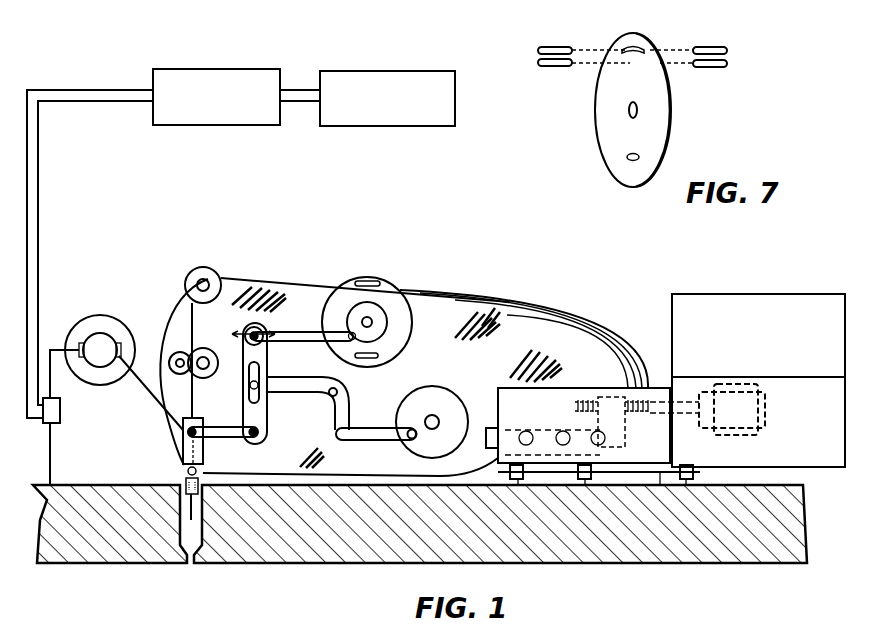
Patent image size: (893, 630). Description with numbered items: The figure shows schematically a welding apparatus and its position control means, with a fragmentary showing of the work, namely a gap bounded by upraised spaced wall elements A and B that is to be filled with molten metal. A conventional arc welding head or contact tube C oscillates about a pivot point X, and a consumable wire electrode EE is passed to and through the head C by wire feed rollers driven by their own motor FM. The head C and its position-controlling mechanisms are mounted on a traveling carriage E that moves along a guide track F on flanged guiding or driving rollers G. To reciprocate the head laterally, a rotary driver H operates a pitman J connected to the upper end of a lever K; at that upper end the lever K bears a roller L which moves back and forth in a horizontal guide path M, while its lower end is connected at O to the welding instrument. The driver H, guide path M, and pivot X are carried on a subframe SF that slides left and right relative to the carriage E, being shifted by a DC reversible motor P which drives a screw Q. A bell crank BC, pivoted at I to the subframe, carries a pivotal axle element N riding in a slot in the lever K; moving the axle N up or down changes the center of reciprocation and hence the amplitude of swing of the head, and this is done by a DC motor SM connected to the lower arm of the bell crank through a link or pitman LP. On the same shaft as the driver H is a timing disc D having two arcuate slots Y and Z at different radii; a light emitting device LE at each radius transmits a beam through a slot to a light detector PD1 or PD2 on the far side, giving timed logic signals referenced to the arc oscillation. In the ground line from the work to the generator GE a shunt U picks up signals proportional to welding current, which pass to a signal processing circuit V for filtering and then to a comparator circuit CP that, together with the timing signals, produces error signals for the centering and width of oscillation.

In FIG. 1, the signal processing circuit V is at (238, 125).
In FIG. 1, the comparator circuit CP is at (396, 127).
In FIG. 1, the generator GE is at (99, 315).
In FIG. 1, the shunt U is at (60, 415).
In FIG. 1, the consumable wire electrode EE is at (188, 292).
In FIG. 1, the wire feed motor FM is at (176, 352).
In FIG. 1, the horizontal guide path M is at (237, 328).
In FIG. 1, the roller L is at (248, 339).
In FIG. 1, the pitman J is at (279, 332).
In FIG. 1, the lever K is at (267, 360).
In FIG. 1, the pivotal axle element N is at (259, 390).
In FIG. 1, the pivot I is at (330, 396).
In FIG. 1, the bell crank BC is at (340, 393).
In FIG. 1, the link or pitman LP is at (378, 442).
In FIG. 1, the DC motor SM is at (441, 388).
In FIG. 1, the arcuate slot Y is at (374, 281).
In FIG. 7, the arcuate slot Y is at (640, 45).
In FIG. 1, the rotary driver H is at (388, 317).
In FIG. 1, the rotating disc D is at (404, 352).
In FIG. 7, the rotating disc D is at (677, 115).
In FIG. 1, the arcuate slot Z is at (376, 359).
In FIG. 7, the arcuate slot Z is at (628, 160).
In FIG. 1, the subframe SF is at (572, 318).
In FIG. 1, the screw Q is at (657, 400).
In FIG. 1, the DC reversible motor P is at (734, 385).
In FIG. 1, the traveling carriage E is at (846, 397).
In FIG. 1, the flanged rollers G is at (515, 480).
In FIG. 1, the guide track F is at (592, 481).
In FIG. 1, the pivot point X is at (187, 471).
In FIG. 1, the welding head C is at (203, 455).
In FIG. 1, the connection point O is at (258, 437).
In FIG. 1, the wall element A is at (180, 512).
In FIG. 1, the wall element B is at (203, 517).
In FIG. 7, the light detector PD1 is at (550, 46).
In FIG. 7, the light detector PD2 is at (548, 66).
In FIG. 7, the light emitting device LE is at (727, 50).